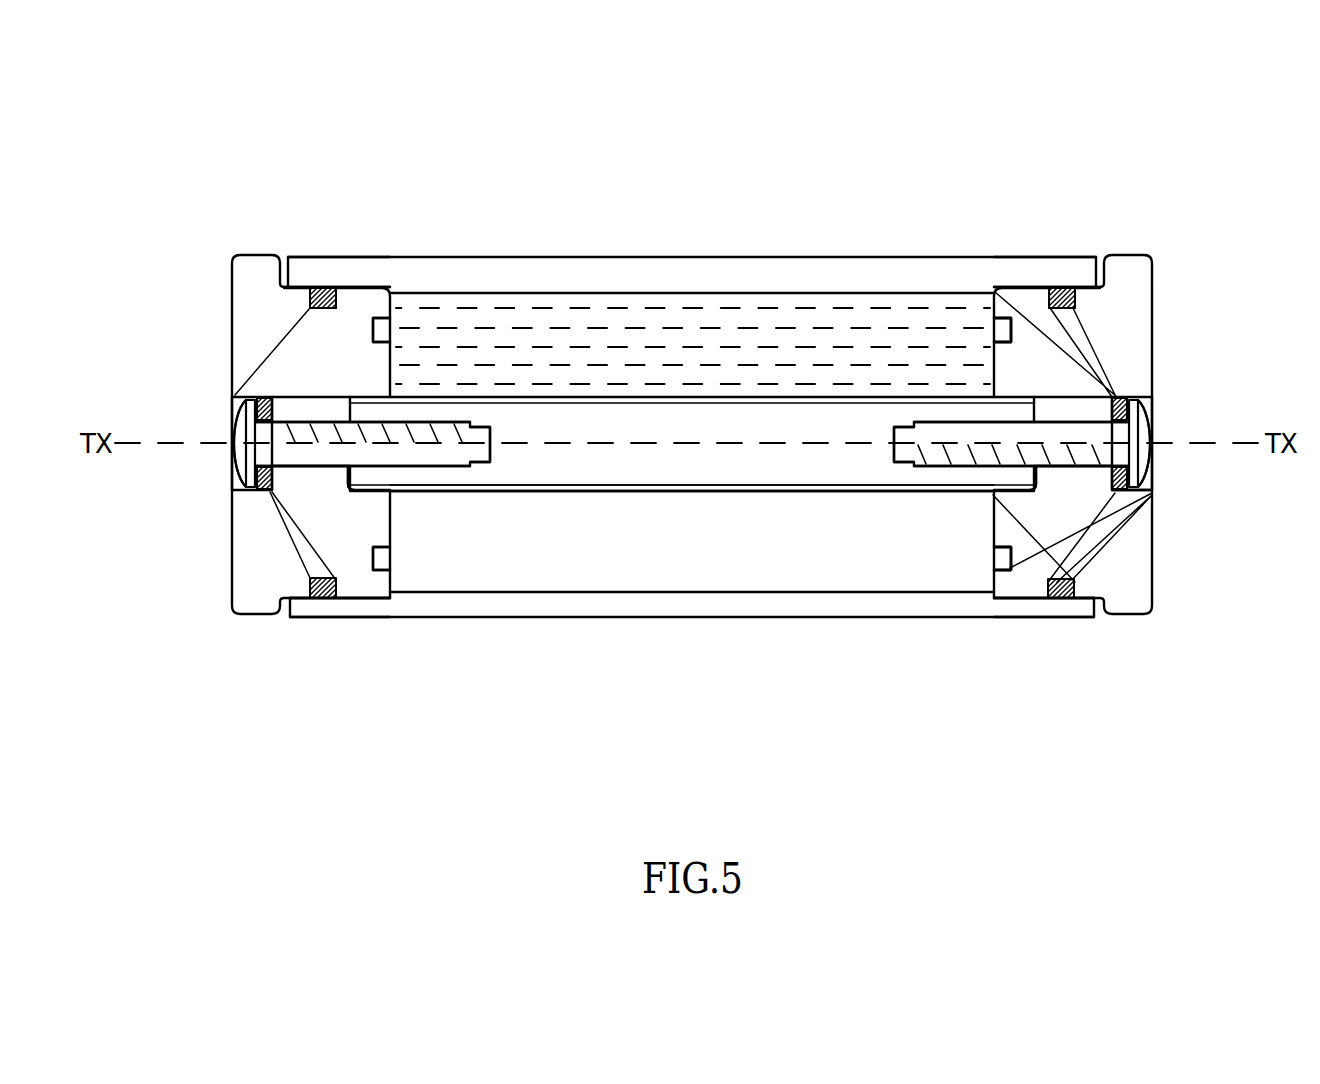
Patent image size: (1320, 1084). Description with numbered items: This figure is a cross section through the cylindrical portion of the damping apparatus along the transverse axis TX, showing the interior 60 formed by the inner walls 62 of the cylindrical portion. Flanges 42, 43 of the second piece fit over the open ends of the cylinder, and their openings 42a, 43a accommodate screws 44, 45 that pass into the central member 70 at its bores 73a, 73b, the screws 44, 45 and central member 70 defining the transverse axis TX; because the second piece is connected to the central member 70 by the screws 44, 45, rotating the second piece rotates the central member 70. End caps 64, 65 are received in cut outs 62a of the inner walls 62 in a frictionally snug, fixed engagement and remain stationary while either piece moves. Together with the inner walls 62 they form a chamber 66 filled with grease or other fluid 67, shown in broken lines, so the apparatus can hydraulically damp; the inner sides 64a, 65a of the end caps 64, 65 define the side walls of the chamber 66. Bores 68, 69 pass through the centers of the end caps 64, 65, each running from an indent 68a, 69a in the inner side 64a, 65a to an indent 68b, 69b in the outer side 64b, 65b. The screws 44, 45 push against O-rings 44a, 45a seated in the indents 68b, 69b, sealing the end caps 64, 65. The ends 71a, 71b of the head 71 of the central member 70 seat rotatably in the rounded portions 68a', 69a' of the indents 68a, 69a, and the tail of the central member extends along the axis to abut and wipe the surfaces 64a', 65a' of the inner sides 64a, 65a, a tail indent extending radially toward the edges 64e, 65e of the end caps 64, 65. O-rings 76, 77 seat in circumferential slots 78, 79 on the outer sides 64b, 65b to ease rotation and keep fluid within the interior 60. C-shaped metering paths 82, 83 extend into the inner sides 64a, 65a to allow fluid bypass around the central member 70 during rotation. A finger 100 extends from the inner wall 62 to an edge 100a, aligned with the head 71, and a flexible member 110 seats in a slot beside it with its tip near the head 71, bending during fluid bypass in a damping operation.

The flange 42 is at (233, 568).
The opening 42a is at (233, 478).
The flange 43 is at (1148, 568).
The opening 43a is at (1152, 405).
The screw 44 is at (240, 437).
The O-ring 44a is at (258, 378).
The screw 45 is at (1140, 432).
The O-ring 45a is at (1127, 395).
The interior 60 is at (571, 300).
The inner walls 62 is at (726, 292).
The cut outs 62a is at (382, 285).
The end cap 64 is at (298, 348).
The inner side 64a is at (395, 604).
The surface 64a' is at (420, 265).
The outer side 64b is at (335, 480).
The edge 64e is at (362, 597).
The end cap 65 is at (1060, 372).
The inner side 65a is at (1001, 605).
The surface 65a' is at (942, 417).
The outer side 65b is at (1102, 518).
The edge 65e is at (1010, 600).
The chamber 66 is at (767, 300).
The fluid 67 is at (818, 342).
The bore 68 is at (348, 480).
The indent 68a is at (334, 271).
The rounded portion 68a' is at (366, 317).
The indent 68b is at (232, 403).
The bore 69 is at (1100, 518).
The indent 69a is at (1056, 310).
The rounded portion 69a' is at (1011, 396).
The indent 69b is at (1153, 484).
The central member 70 is at (613, 388).
The head 71 is at (590, 477).
The end 71a is at (325, 478).
The end 71b is at (1048, 600).
The bore 73a is at (447, 468).
The bore 73b is at (920, 490).
The O-ring 76 is at (327, 287).
The O-ring 77 is at (1053, 288).
The circumferential slot 78 is at (315, 311).
The circumferential slot 79 is at (1097, 313).
The metering path 82 is at (395, 333).
The metering path 83 is at (993, 322).
The finger 100 is at (747, 550).
The edge 100a is at (690, 492).
The flexible member 110 is at (838, 492).